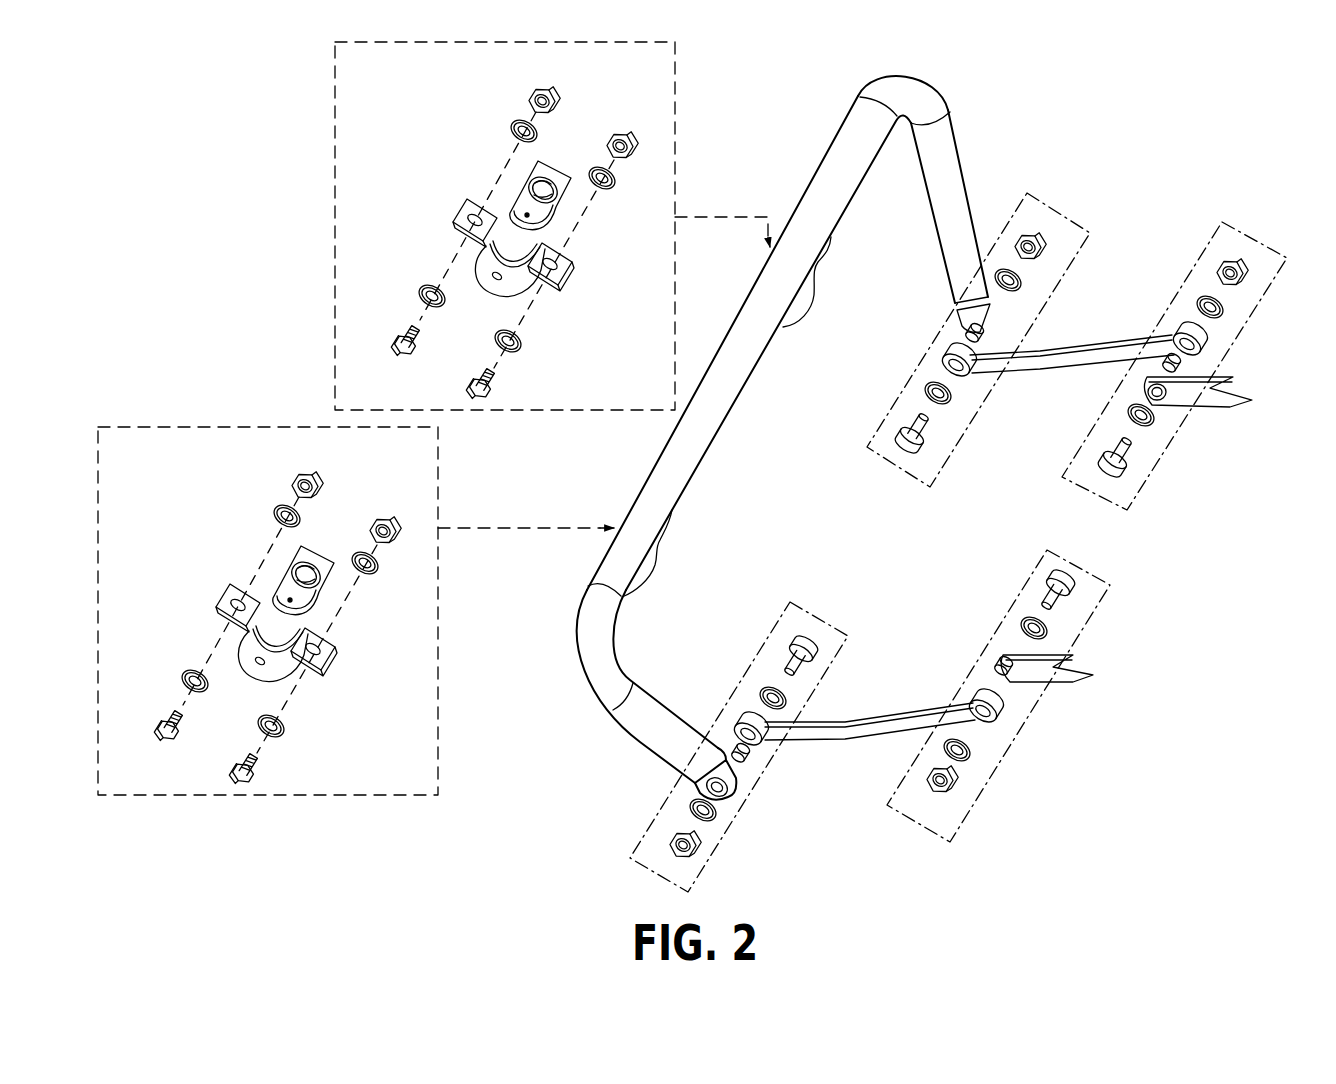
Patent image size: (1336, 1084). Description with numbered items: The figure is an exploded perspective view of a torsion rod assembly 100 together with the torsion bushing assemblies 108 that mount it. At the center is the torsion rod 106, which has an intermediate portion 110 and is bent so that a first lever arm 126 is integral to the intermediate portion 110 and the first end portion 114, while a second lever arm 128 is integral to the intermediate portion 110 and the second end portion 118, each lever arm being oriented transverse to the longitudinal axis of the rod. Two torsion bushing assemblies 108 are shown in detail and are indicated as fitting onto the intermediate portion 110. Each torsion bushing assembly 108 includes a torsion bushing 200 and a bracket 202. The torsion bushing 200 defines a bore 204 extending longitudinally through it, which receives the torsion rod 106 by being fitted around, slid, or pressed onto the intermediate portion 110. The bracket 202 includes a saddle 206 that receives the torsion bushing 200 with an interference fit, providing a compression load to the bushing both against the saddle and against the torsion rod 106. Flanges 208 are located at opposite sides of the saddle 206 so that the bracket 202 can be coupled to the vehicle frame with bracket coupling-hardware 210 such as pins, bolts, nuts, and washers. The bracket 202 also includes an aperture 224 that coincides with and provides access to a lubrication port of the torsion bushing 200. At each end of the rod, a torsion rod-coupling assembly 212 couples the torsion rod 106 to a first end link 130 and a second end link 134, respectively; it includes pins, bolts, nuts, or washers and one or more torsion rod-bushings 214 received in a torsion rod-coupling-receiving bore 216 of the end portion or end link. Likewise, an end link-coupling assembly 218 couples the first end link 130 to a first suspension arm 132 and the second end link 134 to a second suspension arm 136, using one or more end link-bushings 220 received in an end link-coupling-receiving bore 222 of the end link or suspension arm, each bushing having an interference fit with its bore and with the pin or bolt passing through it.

The torsion rod assembly 100 is at (967, 78).
The torsion rod 106 is at (757, 425).
The torsion bushing assembly 108 is at (333, 133).
The intermediate portion 110 is at (657, 563).
The first end portion 114 is at (703, 689).
The second end portion 118 is at (945, 316).
The first lever arm 126 is at (638, 740).
The second lever arm 128 is at (975, 182).
The first end link 130 is at (892, 720).
The first suspension arm 132 is at (1040, 673).
The second end link 134 is at (1075, 352).
The second suspension arm 136 is at (1208, 394).
The torsion bushing 200 is at (558, 155).
The bracket 202 is at (491, 300).
The bore 204 is at (558, 188).
The saddle 206 is at (482, 270).
The flanges 208 is at (464, 204).
The bracket coupling-hardware 210 is at (641, 134).
The torsion rod-coupling assembly 212 is at (805, 609).
The torsion rod-bushing 214 is at (1006, 371).
The torsion rod-coupling-receiving bore 216 is at (962, 381).
The end link-coupling assembly 218 is at (1057, 212).
The end link-bushing 220 is at (1203, 340).
The end link-coupling-receiving bore 222 is at (1180, 366).
The aperture 224 is at (503, 279).